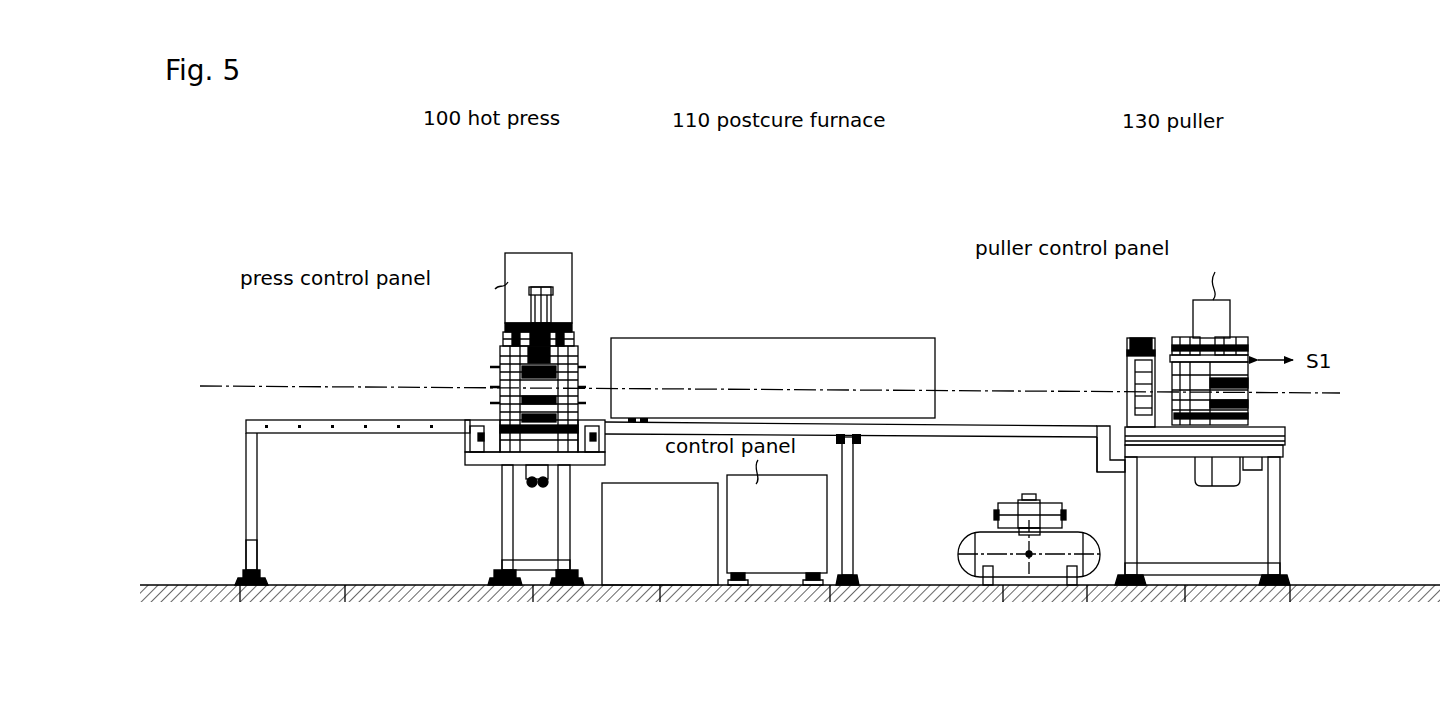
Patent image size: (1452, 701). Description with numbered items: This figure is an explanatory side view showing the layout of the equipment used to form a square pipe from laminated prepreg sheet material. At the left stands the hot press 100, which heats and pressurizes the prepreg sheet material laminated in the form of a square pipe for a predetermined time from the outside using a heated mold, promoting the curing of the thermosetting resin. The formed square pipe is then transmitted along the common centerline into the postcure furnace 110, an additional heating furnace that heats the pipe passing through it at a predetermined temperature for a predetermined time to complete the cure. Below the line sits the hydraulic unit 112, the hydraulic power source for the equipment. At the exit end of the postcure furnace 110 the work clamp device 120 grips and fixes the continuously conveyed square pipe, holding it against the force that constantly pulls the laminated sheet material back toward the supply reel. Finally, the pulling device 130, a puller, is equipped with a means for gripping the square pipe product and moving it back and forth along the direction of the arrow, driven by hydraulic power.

The hot press 100 is at (544, 249).
The postcure furnace 110 is at (772, 357).
The hydraulic unit 112 is at (657, 575).
The work clamp device 120 is at (1131, 338).
The pulling device 130 is at (1244, 329).